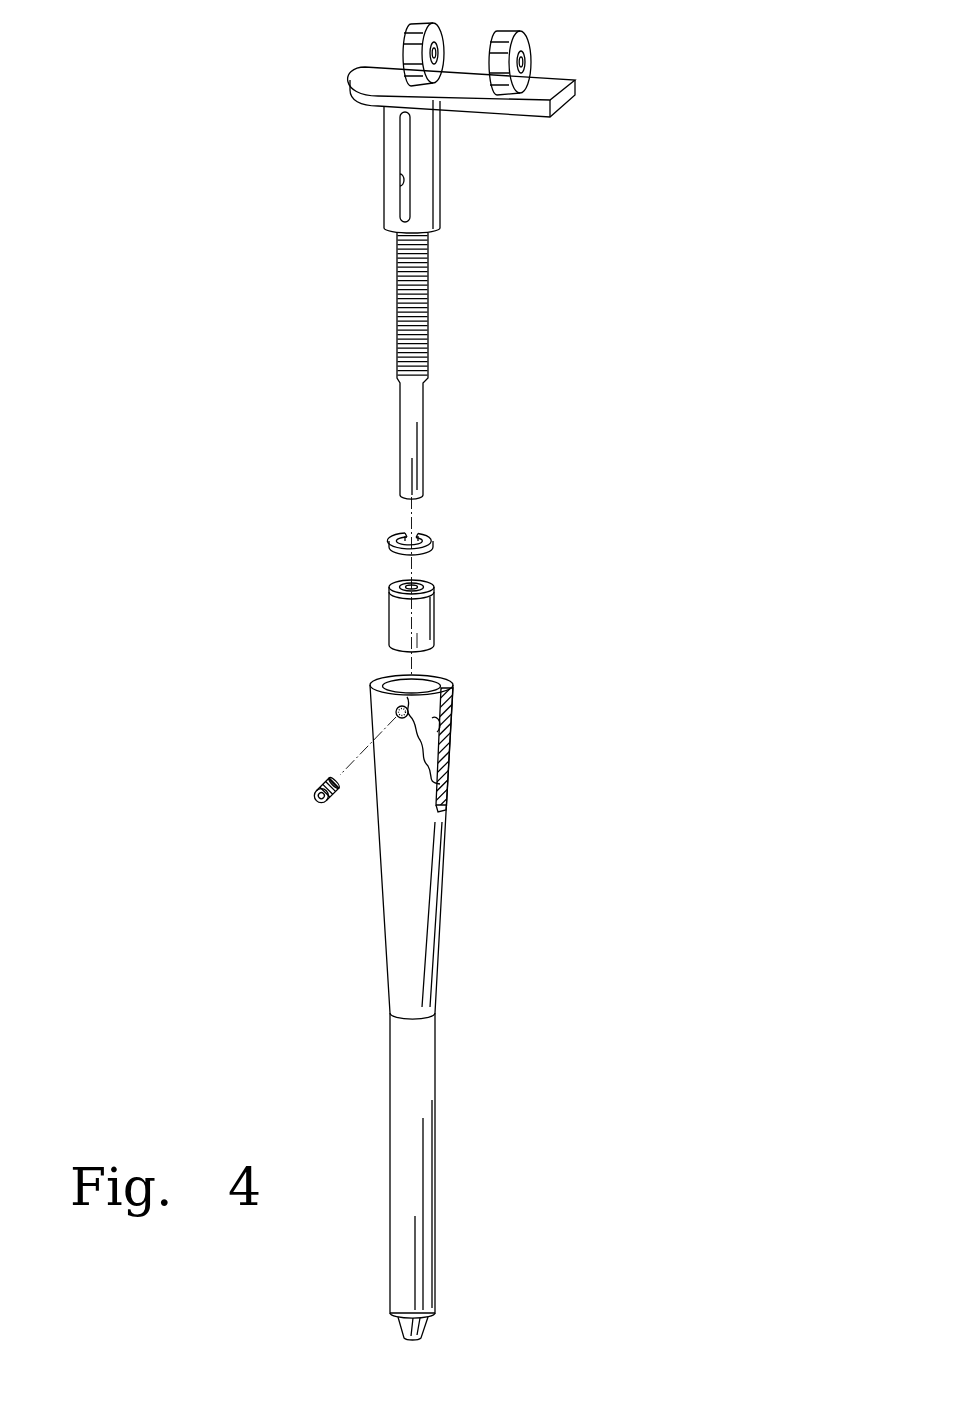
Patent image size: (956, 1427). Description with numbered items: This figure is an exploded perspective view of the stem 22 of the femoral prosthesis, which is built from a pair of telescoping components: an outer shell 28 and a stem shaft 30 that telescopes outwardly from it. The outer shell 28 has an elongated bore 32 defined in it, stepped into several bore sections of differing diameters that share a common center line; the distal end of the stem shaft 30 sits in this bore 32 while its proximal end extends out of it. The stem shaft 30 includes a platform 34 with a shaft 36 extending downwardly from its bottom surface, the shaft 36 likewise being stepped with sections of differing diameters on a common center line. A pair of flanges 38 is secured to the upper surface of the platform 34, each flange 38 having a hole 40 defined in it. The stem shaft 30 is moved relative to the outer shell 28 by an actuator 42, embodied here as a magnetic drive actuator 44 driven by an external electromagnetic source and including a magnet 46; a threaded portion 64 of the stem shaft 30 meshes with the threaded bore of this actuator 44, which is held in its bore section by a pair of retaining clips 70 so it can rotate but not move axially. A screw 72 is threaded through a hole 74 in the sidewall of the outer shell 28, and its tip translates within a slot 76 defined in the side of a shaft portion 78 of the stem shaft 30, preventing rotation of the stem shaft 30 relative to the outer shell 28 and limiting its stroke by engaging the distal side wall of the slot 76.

The stem 22 is at (664, 78).
The outer shell 28 is at (420, 918).
The stem shaft 30 is at (438, 190).
The elongated bore 32 is at (450, 721).
The platform 34 is at (553, 93).
The shaft 36 is at (390, 133).
The flanges 38 is at (416, 30).
The hole 40 is at (440, 58).
The actuator 42 is at (462, 566).
The magnetic drive actuator 44 is at (452, 596).
The magnet 46 is at (420, 626).
The threaded portion 64 is at (427, 320).
The retaining clips 70 is at (397, 526).
The screw 72 is at (320, 802).
The hole 74 is at (396, 711).
The slot 76 is at (404, 182).
The shaft portion 78 is at (432, 138).